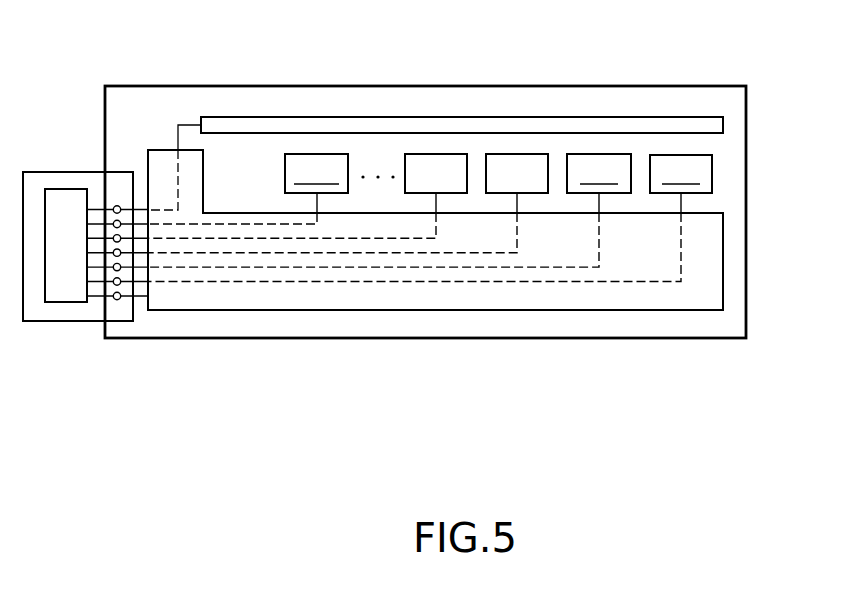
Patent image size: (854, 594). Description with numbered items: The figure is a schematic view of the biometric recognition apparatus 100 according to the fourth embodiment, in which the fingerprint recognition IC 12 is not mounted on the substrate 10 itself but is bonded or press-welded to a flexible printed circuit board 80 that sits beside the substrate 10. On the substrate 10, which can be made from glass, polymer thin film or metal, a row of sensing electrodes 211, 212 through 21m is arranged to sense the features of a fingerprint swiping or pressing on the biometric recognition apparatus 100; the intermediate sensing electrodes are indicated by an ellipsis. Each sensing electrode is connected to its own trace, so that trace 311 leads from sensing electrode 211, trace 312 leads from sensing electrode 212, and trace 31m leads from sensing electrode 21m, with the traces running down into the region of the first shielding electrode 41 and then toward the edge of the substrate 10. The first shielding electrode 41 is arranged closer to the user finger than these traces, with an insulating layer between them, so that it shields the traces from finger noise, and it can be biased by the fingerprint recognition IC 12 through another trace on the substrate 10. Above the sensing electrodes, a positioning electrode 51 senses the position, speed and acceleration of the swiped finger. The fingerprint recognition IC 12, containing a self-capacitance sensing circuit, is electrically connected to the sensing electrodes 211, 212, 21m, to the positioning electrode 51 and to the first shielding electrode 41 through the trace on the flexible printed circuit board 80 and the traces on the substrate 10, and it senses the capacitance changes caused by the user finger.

The biometric recognition apparatus 100 is at (567, 25).
The substrate 10 is at (660, 100).
The positioning electrode 51 is at (431, 88).
The flexible printed circuit board 80 is at (38, 179).
The fingerprint recognition IC 12 is at (68, 198).
The first shielding electrode 41 is at (703, 298).
The sensing electrode 21m is at (316, 173).
The sensing electrode 212 is at (599, 173).
The sensing electrode 211 is at (681, 174).
The trace 31m is at (317, 205).
The trace 312 is at (600, 204).
The trace 311 is at (685, 204).